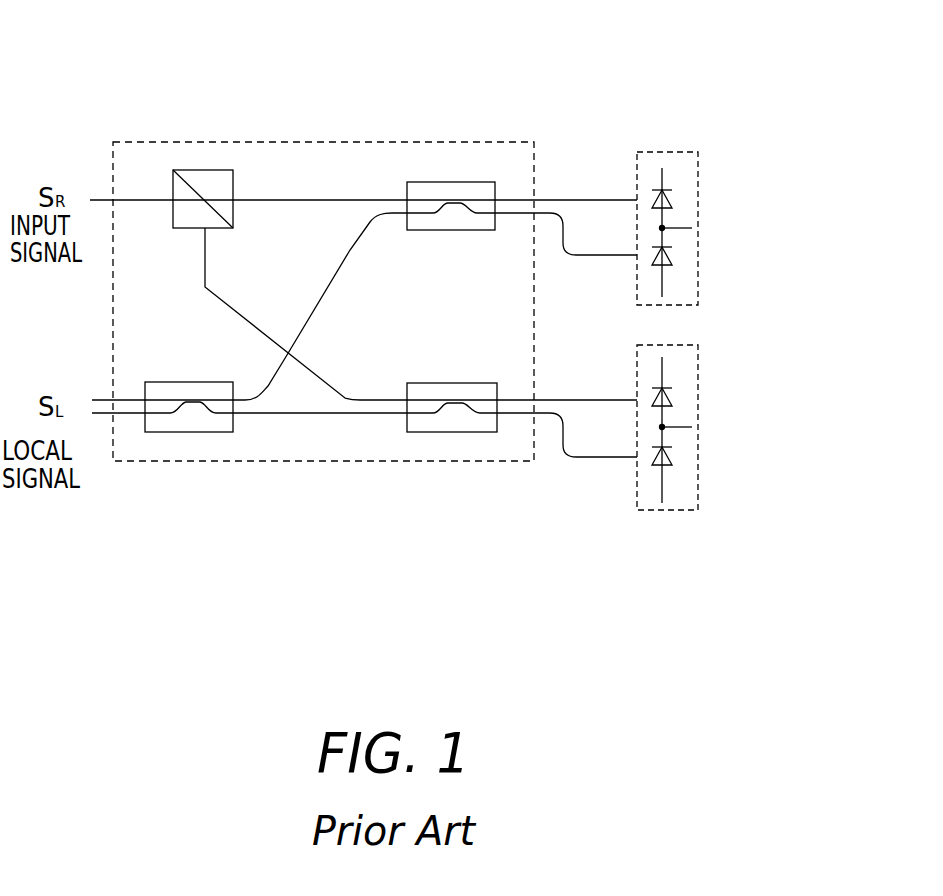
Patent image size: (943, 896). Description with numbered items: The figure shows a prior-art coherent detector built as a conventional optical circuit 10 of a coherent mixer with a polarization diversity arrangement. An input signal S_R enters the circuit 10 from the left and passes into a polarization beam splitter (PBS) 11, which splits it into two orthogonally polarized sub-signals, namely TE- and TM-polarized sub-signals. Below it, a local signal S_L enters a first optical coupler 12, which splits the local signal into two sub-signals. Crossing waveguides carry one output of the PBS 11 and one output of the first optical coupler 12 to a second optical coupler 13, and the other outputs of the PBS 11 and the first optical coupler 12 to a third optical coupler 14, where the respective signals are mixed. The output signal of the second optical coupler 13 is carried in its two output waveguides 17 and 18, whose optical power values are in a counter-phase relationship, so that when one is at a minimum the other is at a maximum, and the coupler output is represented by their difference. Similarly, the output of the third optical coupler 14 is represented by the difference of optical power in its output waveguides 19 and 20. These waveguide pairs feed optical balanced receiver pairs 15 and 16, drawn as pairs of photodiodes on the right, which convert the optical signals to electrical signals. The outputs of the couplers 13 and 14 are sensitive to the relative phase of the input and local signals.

The optical circuit 10 is at (132, 142).
The polarization beam splitter 11 is at (213, 168).
The first optical coupler 12 is at (203, 432).
The second optical coupler 13 is at (452, 182).
The third optical coupler 14 is at (462, 433).
The optical balanced receiver pair 15 is at (683, 150).
The optical balanced receiver pair 16 is at (688, 510).
The output waveguide 17 is at (560, 200).
The output waveguide 18 is at (593, 256).
The output waveguide 19 is at (590, 401).
The output waveguide 20 is at (597, 458).